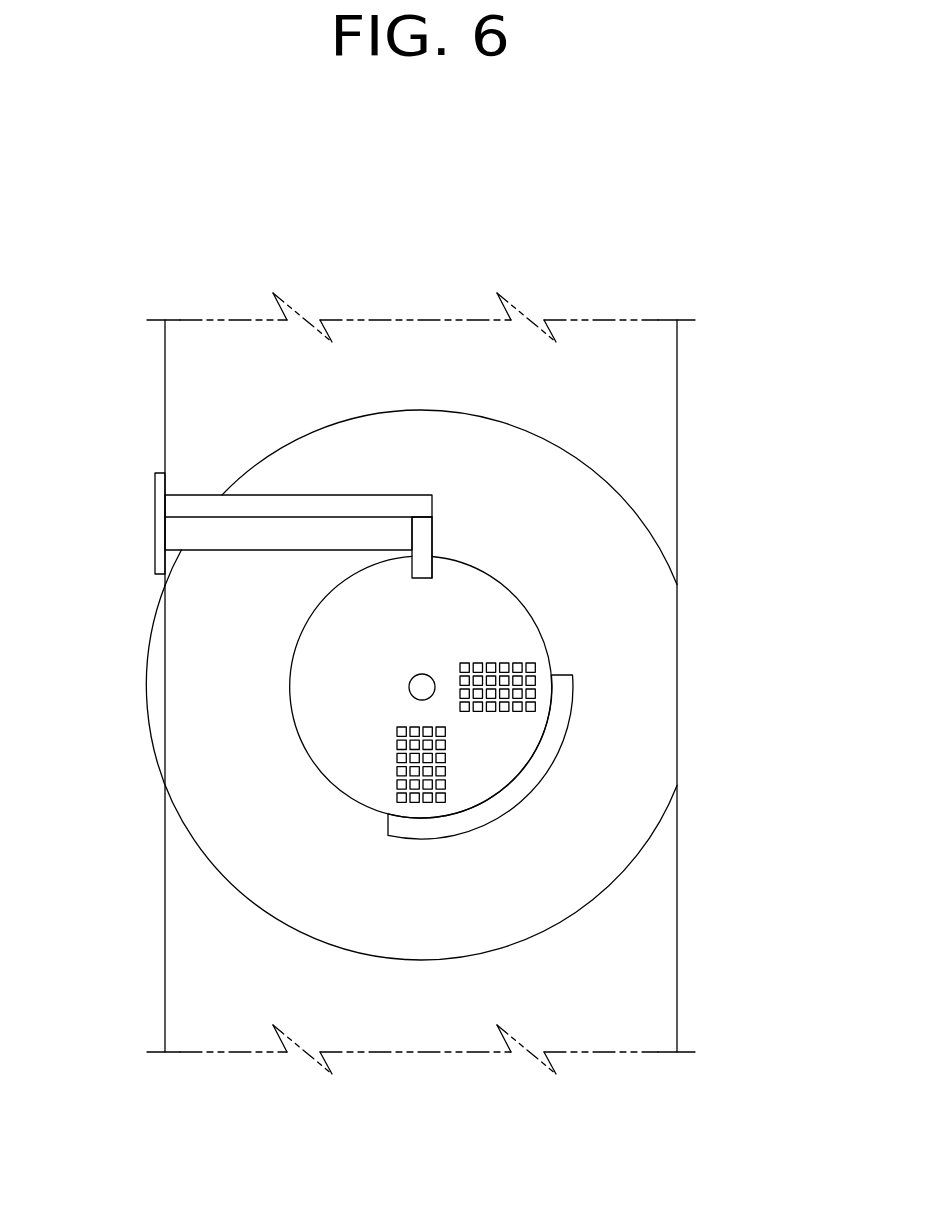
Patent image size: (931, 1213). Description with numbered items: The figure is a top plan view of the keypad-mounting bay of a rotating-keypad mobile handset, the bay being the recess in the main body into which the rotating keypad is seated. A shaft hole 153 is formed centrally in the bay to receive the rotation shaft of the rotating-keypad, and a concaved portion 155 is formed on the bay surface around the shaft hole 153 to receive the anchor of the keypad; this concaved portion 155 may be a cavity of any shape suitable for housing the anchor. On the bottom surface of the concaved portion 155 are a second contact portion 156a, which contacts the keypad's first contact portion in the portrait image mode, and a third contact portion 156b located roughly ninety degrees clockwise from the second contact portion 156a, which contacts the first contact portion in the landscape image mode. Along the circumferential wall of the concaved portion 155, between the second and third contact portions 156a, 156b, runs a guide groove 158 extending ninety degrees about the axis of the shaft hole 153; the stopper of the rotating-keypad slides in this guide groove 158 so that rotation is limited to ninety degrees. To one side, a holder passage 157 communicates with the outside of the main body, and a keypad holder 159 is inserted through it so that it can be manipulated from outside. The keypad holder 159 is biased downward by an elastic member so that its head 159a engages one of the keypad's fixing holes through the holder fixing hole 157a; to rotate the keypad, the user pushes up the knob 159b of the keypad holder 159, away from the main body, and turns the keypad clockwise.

The shaft hole 153 is at (505, 642).
The concaved portion 155 is at (525, 671).
The second contact portion 156a is at (615, 654).
The third contact portion 156b is at (253, 845).
The holder passage 157 is at (244, 455).
The holder fixing hole 157a is at (599, 529).
The guide groove 158 is at (573, 783).
The keypad holder 159 is at (246, 574).
The head 159a is at (585, 484).
The knob 159b is at (102, 518).